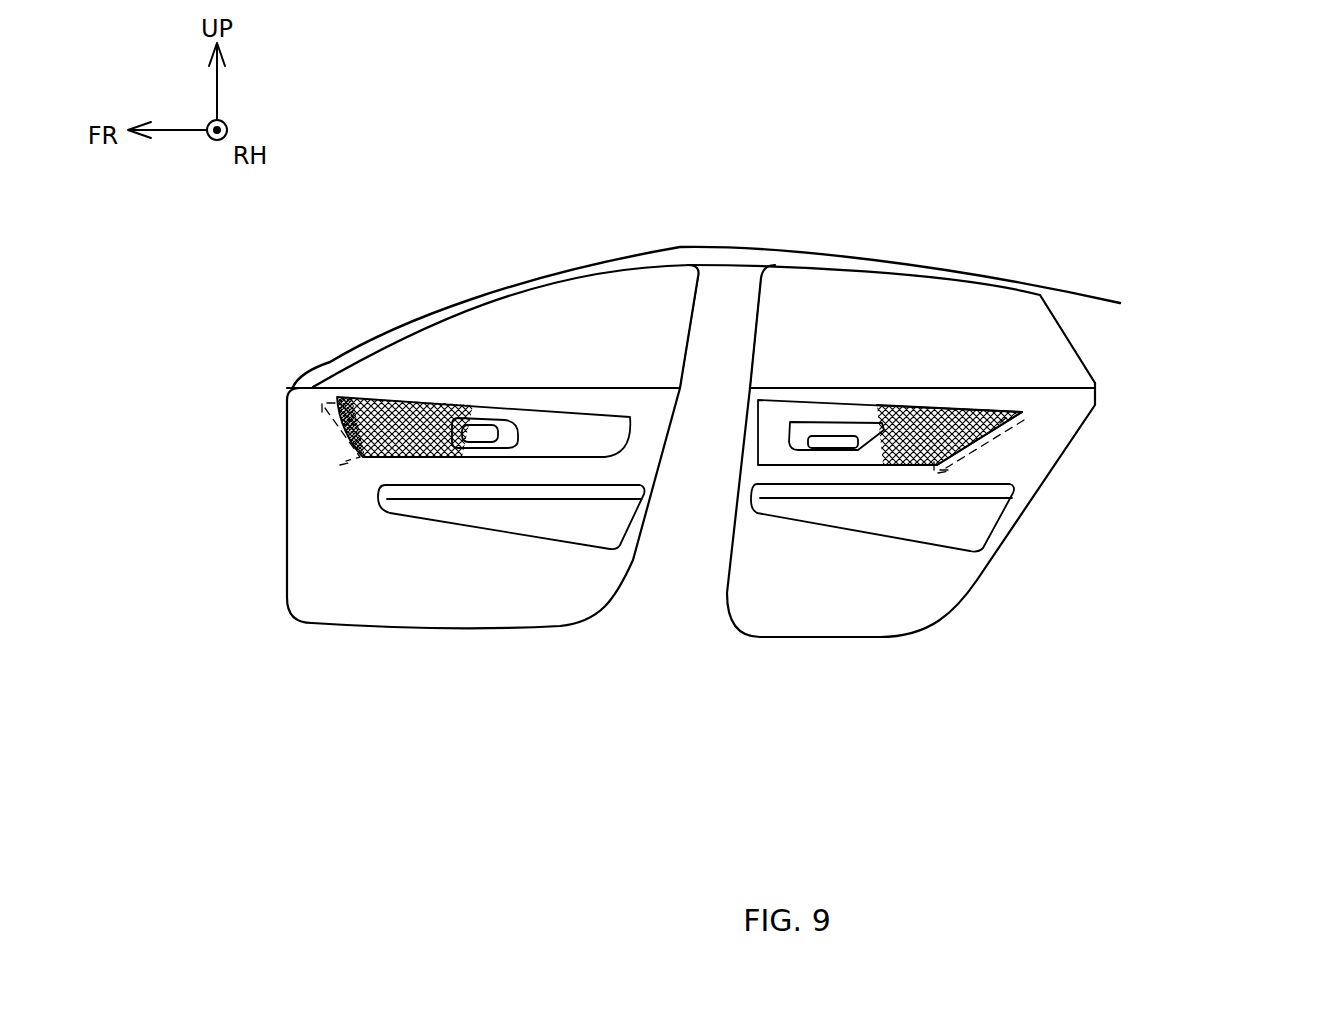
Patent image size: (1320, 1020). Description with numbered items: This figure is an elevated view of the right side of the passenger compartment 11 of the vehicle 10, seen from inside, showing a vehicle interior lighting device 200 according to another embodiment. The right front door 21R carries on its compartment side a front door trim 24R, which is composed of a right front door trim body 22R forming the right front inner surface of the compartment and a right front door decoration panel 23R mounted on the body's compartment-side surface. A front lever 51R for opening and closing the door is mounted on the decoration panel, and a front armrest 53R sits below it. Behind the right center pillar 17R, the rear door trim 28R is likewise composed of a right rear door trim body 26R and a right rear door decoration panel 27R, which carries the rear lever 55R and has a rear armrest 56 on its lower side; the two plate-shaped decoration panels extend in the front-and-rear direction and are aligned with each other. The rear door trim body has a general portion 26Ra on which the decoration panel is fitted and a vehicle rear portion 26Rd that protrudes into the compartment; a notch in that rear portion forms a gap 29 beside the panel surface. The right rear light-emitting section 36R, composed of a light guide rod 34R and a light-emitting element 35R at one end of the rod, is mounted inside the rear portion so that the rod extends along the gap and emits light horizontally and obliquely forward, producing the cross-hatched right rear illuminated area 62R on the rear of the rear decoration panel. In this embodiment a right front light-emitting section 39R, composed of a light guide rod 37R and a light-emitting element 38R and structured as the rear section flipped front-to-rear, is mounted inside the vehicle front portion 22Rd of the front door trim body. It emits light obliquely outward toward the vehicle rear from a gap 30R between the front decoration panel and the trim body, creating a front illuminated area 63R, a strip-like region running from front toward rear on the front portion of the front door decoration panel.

The vehicle interior lighting device 200 is at (412, 122).
The vehicle 10 is at (1076, 293).
The passenger compartment 11 is at (1028, 756).
The right center pillar 17R is at (723, 328).
The right front door 21R is at (375, 623).
The right front door trim body 22R is at (548, 607).
The vehicle front portion of the front door trim body 22Rd is at (300, 416).
The right front door decoration panel 23R is at (630, 437).
The front door trim 24R is at (500, 770).
The right rear door trim body 26R is at (838, 618).
The general portion of the rear door trim body 26Ra is at (999, 393).
The vehicle rear portion of the rear door trim body 26Rd is at (1028, 428).
The right rear door decoration panel 27R is at (770, 448).
The rear door trim 28R is at (722, 788).
The gap 29 is at (1012, 400).
The gap 30R is at (352, 398).
The light guide rod 34R is at (947, 472).
The light-emitting element 35R is at (1000, 423).
The right rear light-emitting section 36R is at (1233, 490).
The light guide rod 37R is at (322, 413).
The light-emitting element 38R is at (350, 460).
The right front light-emitting section 39R is at (140, 447).
The front lever 51R is at (494, 423).
The front armrest 53R is at (483, 530).
The rear lever 55R is at (835, 438).
The rear armrest 56 is at (957, 540).
The right rear illuminated area 62R is at (954, 396).
The front illuminated area 63R is at (404, 393).